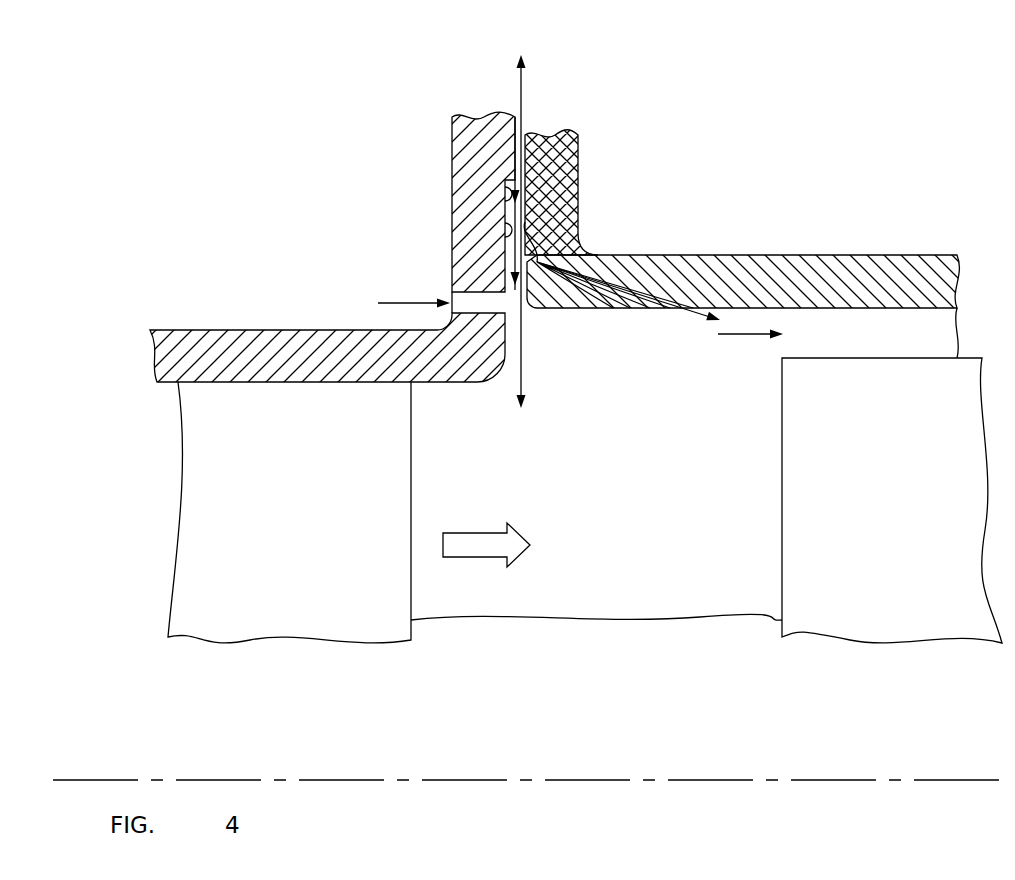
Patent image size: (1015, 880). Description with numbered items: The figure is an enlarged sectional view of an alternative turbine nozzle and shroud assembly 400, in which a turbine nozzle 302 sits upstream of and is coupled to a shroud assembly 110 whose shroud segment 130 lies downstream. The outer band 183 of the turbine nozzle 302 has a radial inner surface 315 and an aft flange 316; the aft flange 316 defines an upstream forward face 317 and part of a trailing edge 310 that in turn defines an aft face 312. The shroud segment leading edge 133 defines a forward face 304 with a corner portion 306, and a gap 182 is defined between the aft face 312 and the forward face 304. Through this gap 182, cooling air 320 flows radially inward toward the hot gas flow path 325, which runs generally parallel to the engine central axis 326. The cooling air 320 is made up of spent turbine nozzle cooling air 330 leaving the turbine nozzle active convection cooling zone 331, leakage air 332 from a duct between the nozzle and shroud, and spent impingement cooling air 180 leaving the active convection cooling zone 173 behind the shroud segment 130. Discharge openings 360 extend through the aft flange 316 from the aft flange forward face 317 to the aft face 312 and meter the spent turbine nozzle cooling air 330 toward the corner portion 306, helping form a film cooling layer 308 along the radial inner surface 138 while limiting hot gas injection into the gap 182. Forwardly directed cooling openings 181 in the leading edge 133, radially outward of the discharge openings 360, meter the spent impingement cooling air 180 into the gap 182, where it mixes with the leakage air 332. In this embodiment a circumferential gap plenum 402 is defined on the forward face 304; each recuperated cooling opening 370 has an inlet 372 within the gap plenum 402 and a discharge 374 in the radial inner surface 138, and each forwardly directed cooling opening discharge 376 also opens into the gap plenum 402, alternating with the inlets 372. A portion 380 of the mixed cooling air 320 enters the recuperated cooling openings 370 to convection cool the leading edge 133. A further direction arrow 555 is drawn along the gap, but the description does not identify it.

The shroud assembly 110 is at (684, 92).
The shroud segment 130 is at (803, 268).
The shroud segment leading edge 133 is at (613, 305).
The radial inner surface 138 is at (797, 308).
The active convection cooling zone 173 is at (794, 147).
The spent impingement cooling air 180 is at (594, 228).
The forwardly directed cooling opening 181 is at (575, 222).
The gap 182 is at (536, 350).
The outer band 183 is at (203, 342).
The turbine nozzle 302 is at (273, 375).
The forward face 304 is at (535, 178).
The corner portion 306 is at (528, 335).
The film cooling layer 308 is at (748, 340).
The trailing edge 310 is at (505, 237).
The aft face 312 is at (505, 185).
The radial inner surface 315 is at (363, 382).
The aft flange 316 is at (492, 122).
The aft flange forward face 317 is at (453, 135).
The cooling air 320 is at (503, 257).
The hot gas flow path 325 is at (482, 532).
The central axis 326 is at (858, 778).
The spent turbine nozzle cooling air 330 is at (378, 303).
The turbine nozzle active convection cooling zone 331 is at (288, 216).
The leakage air 332 is at (507, 172).
The discharge opening 360 is at (450, 297).
The recuperated cooling opening 370 is at (657, 300).
The inlet 372 is at (540, 293).
The discharge 374 is at (670, 308).
The forwardly directed cooling opening discharge 376 is at (556, 242).
The portion of mixed cooling air 380 is at (640, 290).
The turbine nozzle and shroud assembly 400 is at (250, 122).
The circumferential gap plenum 402 is at (536, 213).
The axial direction 555 is at (522, 92).